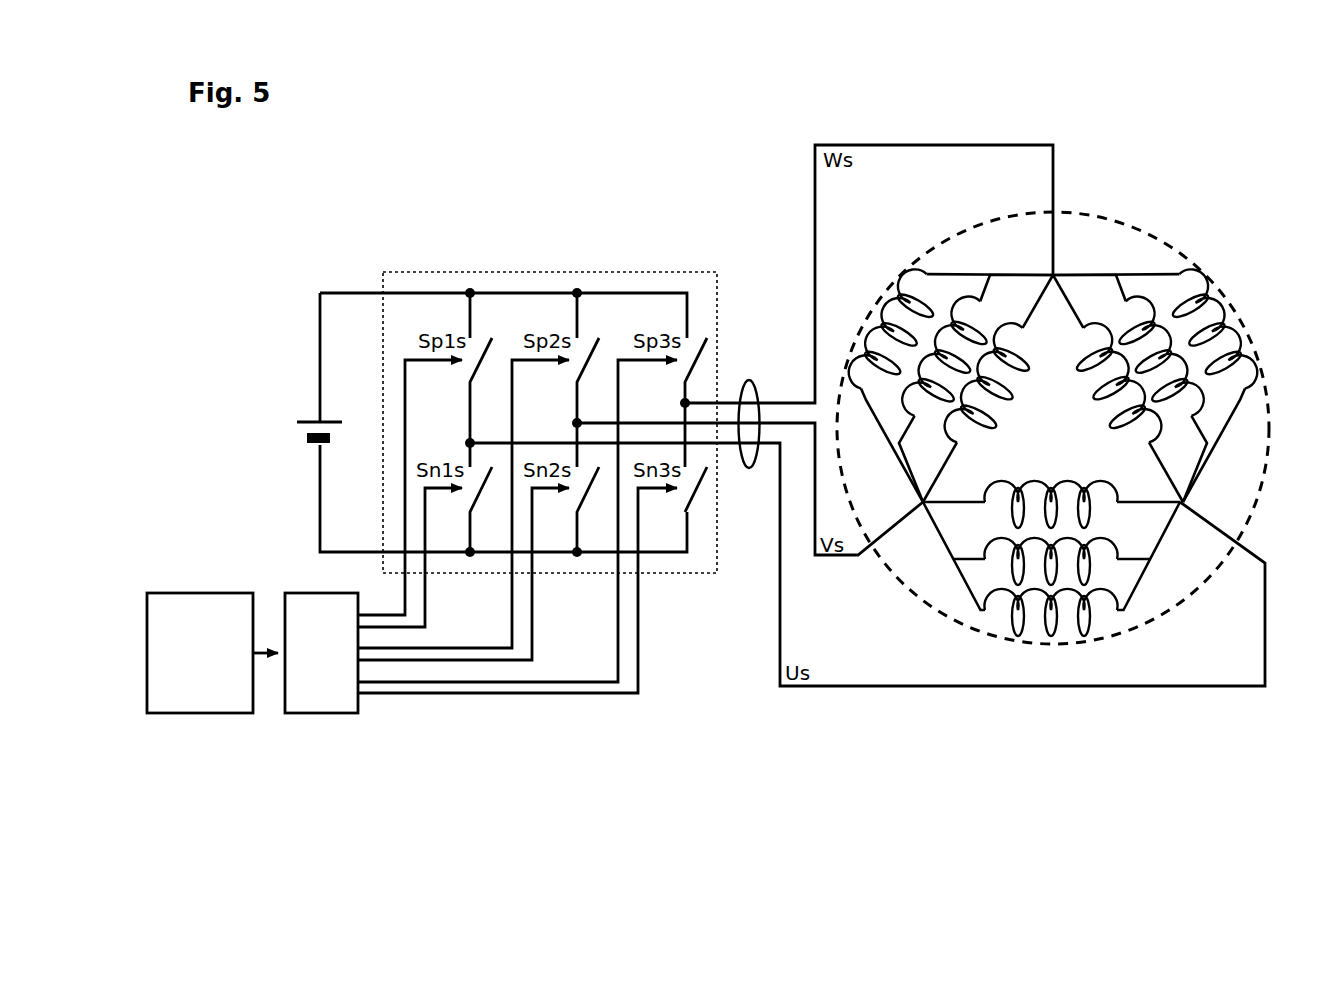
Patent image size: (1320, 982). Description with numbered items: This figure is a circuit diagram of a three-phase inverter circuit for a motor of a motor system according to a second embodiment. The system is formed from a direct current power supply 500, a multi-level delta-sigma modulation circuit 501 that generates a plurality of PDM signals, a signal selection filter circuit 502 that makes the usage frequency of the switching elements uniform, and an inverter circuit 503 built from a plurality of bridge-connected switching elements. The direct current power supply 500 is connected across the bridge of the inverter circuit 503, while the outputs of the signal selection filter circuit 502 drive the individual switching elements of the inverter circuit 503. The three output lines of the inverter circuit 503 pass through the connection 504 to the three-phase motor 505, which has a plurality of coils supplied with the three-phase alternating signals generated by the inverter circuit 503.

The direct current power supply 500 is at (300, 405).
The multi-level delta-sigma modulation circuit 501 is at (203, 587).
The signal selection filter circuit 502 is at (295, 587).
The inverter circuit 503 is at (510, 268).
The connection cable 504 is at (751, 374).
The three-phase motor 505 is at (1186, 243).